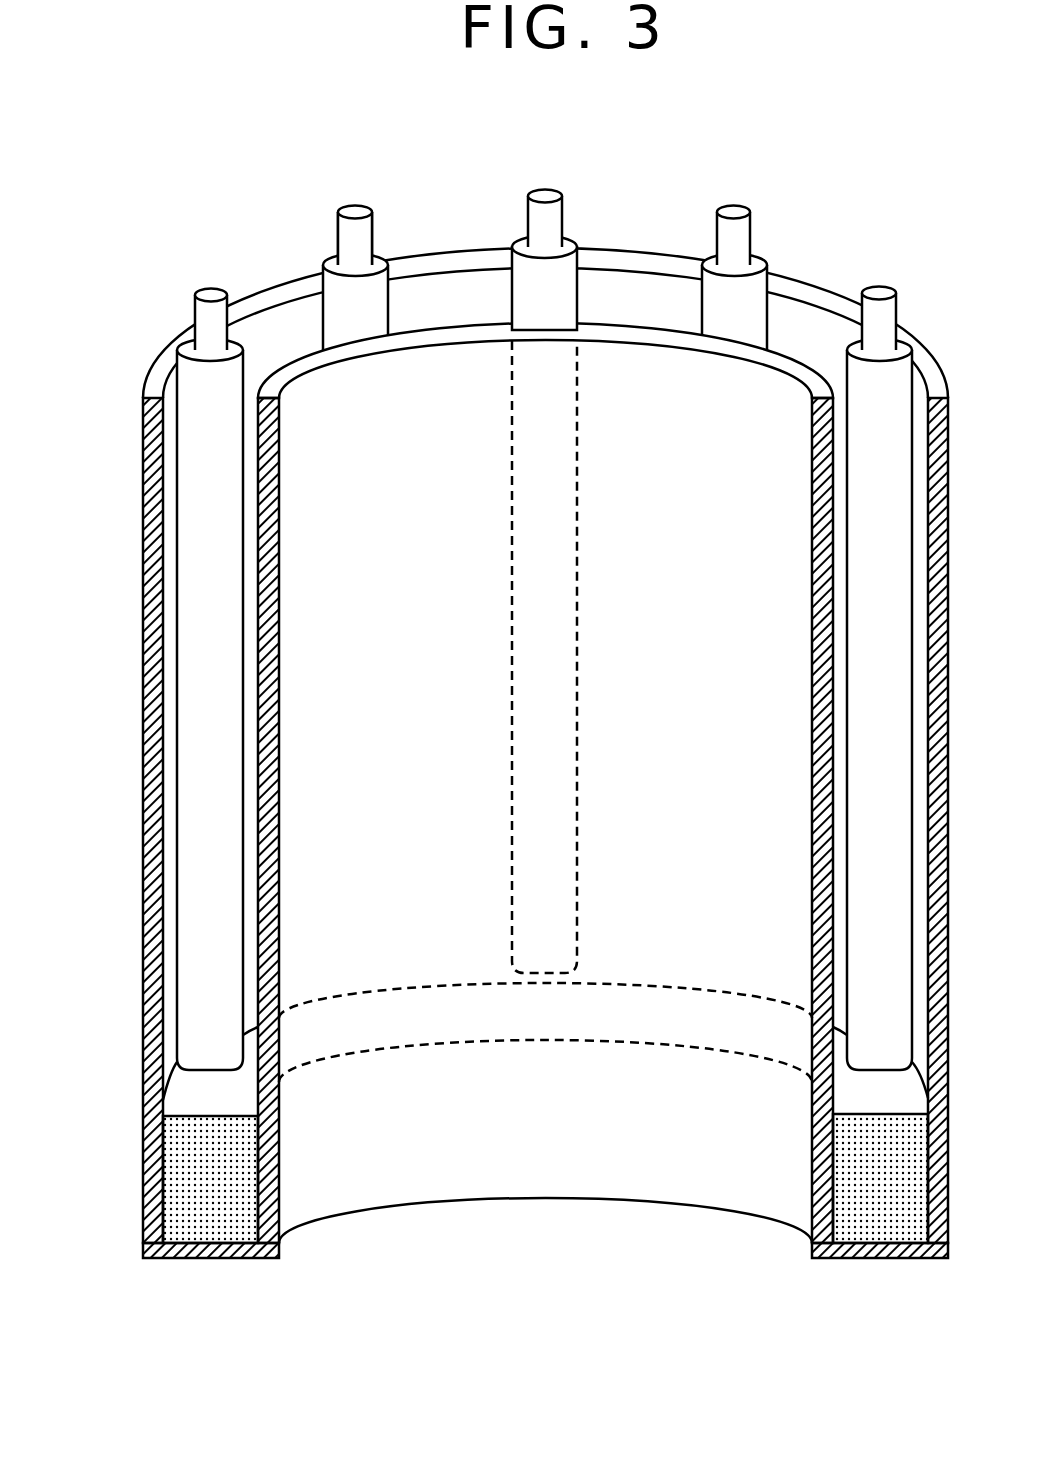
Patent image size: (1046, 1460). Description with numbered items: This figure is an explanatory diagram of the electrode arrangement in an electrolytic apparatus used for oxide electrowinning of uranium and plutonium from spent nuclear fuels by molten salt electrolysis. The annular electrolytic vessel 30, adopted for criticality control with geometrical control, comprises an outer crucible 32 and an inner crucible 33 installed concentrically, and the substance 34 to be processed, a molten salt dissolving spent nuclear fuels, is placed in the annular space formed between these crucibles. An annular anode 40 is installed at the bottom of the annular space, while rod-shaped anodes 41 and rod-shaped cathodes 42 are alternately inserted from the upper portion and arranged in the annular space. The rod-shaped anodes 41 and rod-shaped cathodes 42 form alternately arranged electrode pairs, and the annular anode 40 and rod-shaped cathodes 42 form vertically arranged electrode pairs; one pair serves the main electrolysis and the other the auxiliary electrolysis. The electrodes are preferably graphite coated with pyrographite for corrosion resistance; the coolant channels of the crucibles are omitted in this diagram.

The annular electrolytic vessel 30 is at (283, 282).
The outer crucible 32 is at (452, 255).
The inner crucible 33 is at (628, 330).
The substance to be processed 34 is at (167, 827).
The annular anode 40 is at (212, 1230).
The rod-shaped anode 41 is at (352, 210).
The rod-shaped cathode 42 is at (548, 190).